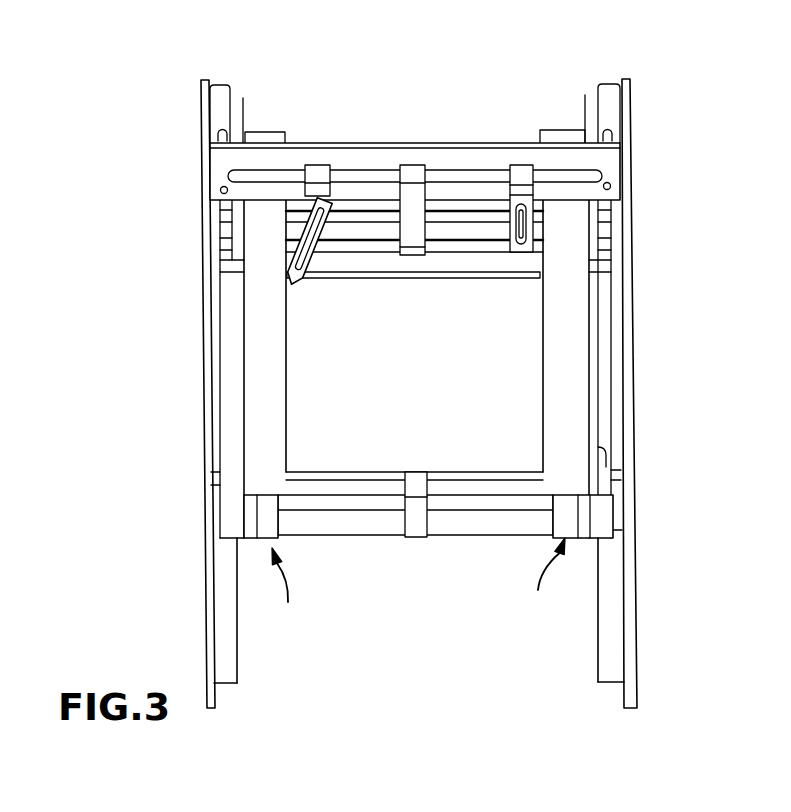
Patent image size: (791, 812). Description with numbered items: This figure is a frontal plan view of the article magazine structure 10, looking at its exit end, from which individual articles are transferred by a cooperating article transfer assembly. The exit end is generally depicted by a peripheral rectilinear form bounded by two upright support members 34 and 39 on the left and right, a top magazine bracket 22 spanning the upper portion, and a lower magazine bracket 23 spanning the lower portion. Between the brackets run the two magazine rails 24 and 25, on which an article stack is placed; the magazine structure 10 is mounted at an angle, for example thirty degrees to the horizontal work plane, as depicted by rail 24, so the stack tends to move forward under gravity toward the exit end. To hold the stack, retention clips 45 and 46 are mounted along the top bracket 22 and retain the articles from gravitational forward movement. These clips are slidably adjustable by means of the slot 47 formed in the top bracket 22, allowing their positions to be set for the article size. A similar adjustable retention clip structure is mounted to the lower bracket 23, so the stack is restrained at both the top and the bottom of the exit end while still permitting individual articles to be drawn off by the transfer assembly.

The article magazine structure 10 is at (501, 74).
The top magazine bracket 22 is at (415, 177).
The slot 47 is at (472, 175).
The retention clip 45 is at (328, 275).
The retention clip 46 is at (495, 275).
The magazine rail 24 is at (266, 376).
The magazine rail 25 is at (572, 369).
The lower magazine bracket 23 is at (468, 518).
The support member 34 is at (222, 601).
The support member 39 is at (610, 600).